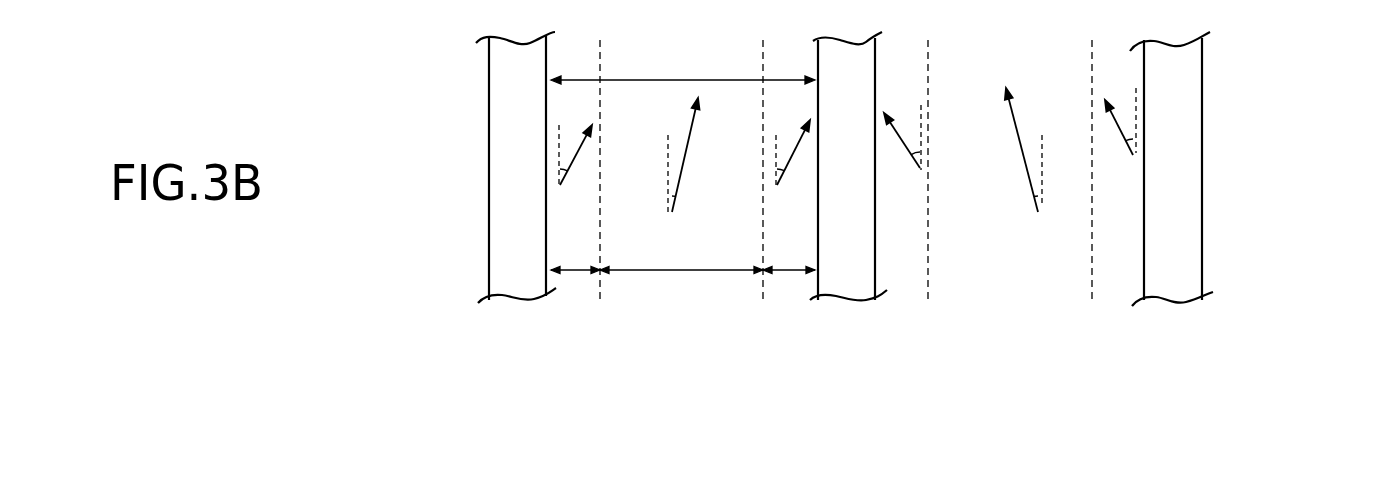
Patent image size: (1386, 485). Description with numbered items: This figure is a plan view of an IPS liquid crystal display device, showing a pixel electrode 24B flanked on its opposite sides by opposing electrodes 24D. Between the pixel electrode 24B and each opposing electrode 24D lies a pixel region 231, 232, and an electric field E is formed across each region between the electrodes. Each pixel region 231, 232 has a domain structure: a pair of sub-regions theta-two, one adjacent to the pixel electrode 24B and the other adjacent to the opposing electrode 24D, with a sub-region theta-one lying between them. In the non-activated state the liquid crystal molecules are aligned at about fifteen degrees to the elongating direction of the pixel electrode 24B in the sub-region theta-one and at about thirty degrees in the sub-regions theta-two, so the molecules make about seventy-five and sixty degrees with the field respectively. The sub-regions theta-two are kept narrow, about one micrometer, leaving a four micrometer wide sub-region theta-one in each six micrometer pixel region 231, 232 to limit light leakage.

The opposing electrode 24D is at (517, 267).
The pixel electrode 24B is at (846, 277).
The pixel region 231 is at (817, 336).
The pixel region 232 is at (1140, 338).